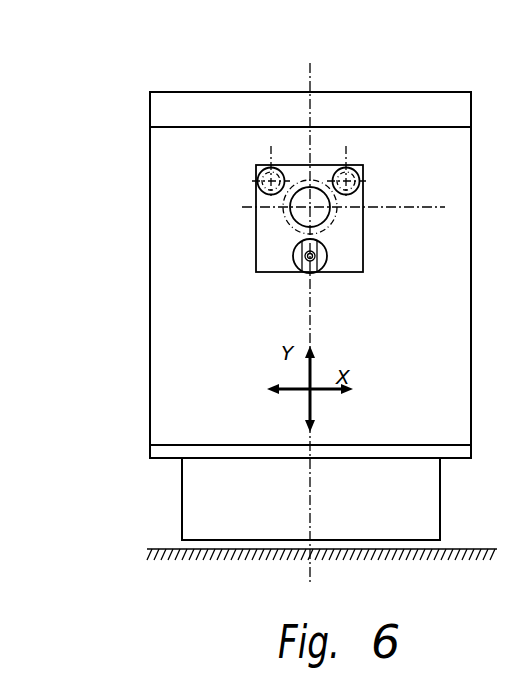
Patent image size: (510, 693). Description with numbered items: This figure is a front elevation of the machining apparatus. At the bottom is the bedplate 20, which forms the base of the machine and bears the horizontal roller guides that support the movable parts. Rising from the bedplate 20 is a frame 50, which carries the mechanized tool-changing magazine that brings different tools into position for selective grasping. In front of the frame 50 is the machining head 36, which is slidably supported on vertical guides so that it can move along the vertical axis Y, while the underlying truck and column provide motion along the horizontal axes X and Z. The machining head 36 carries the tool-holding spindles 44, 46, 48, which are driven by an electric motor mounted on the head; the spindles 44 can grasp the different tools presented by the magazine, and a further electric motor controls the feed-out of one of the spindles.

The bedplate 20 is at (223, 500).
The machining head 36 is at (270, 262).
The tool-holding spindles 44 is at (334, 164).
The tool-holding spindle 46 is at (242, 207).
The tool-holding spindle 48 is at (321, 250).
The frame 50 is at (165, 383).